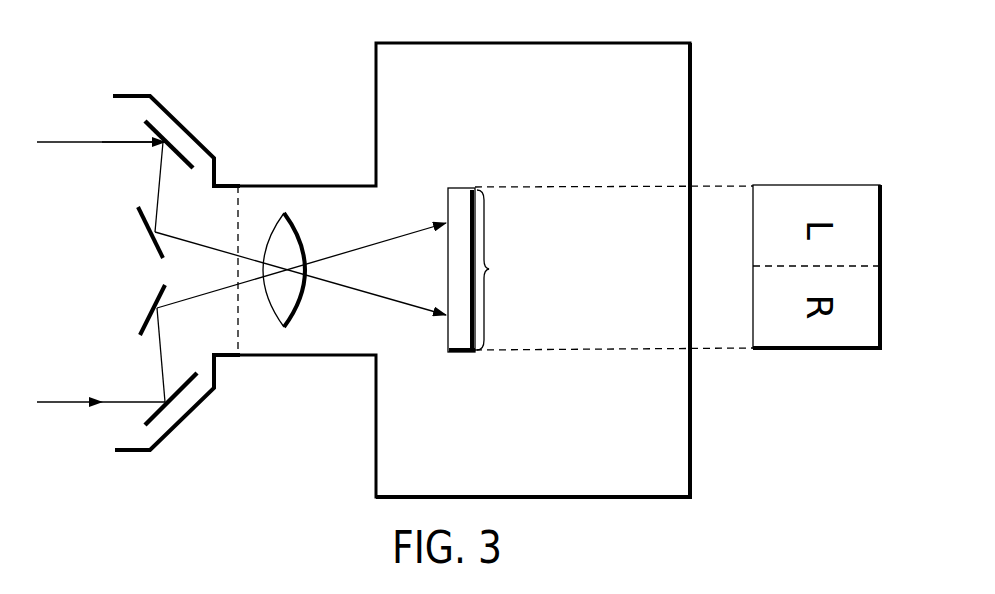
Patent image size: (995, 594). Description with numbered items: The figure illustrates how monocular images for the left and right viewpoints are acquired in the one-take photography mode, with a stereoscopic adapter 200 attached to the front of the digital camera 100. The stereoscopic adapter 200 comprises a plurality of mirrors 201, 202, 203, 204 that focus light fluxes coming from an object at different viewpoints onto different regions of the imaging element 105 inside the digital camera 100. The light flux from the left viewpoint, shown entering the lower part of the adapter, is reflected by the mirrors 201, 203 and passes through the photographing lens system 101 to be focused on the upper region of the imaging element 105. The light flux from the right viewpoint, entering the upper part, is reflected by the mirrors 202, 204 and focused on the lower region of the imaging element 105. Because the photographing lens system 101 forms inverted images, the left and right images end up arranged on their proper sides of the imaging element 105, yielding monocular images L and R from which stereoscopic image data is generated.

The digital camera 100 is at (373, 94).
The stereoscopic adapter 200 is at (231, 115).
The mirror 201 is at (145, 418).
The mirror 202 is at (145, 123).
The mirror 203 is at (155, 300).
The mirror 204 is at (138, 214).
The photographing lens system 101 is at (288, 217).
The imaging element 105 is at (455, 188).